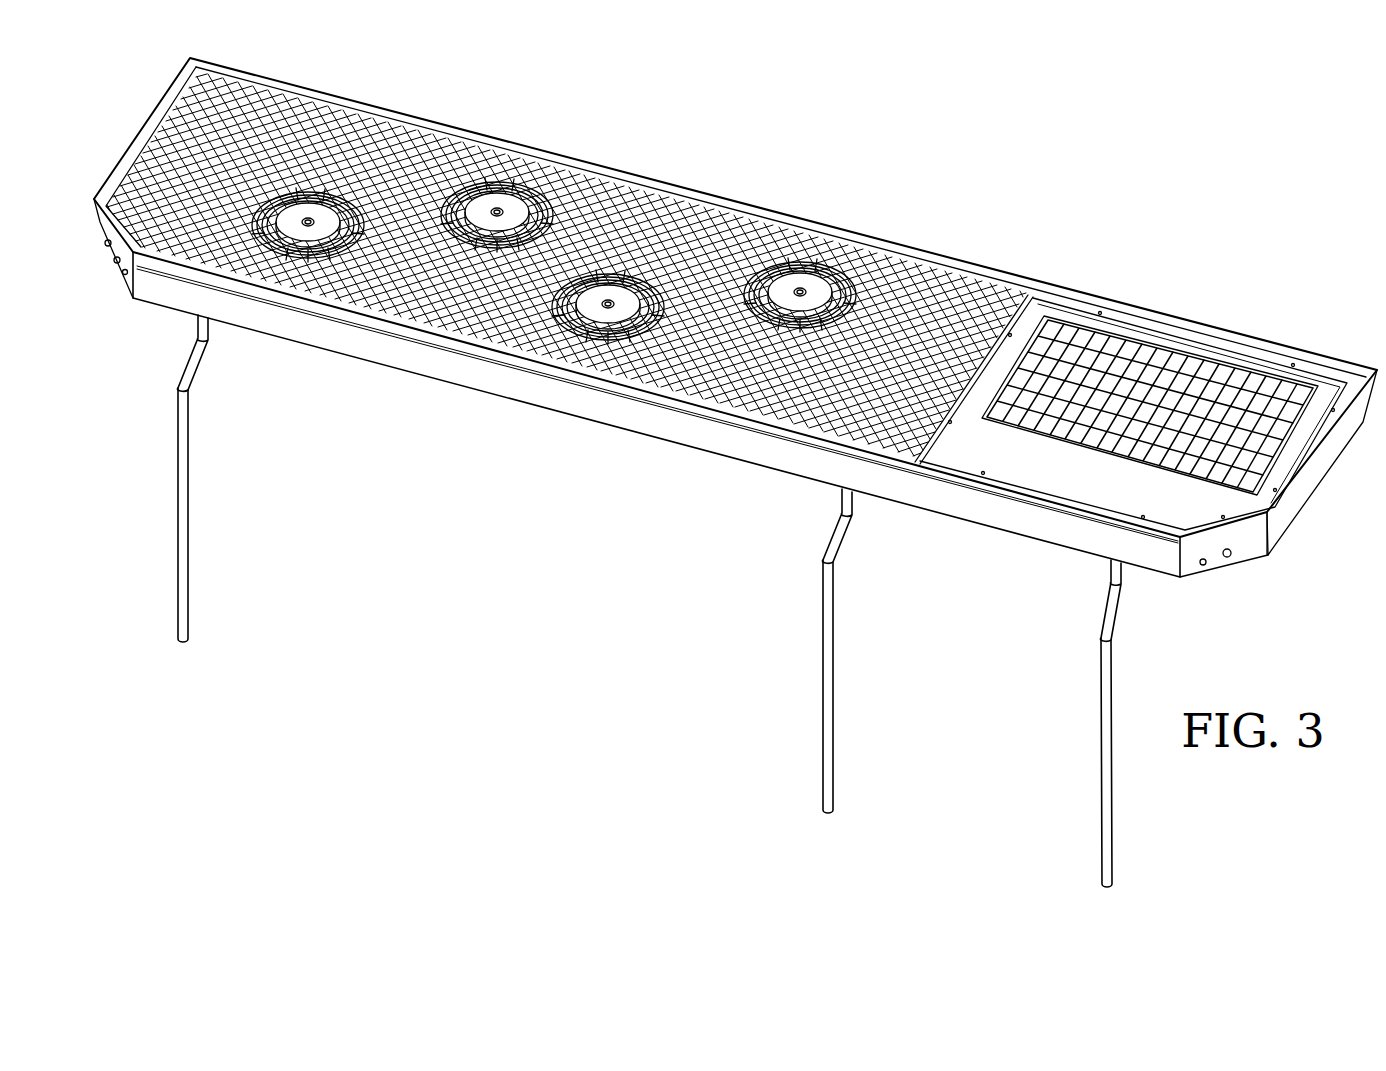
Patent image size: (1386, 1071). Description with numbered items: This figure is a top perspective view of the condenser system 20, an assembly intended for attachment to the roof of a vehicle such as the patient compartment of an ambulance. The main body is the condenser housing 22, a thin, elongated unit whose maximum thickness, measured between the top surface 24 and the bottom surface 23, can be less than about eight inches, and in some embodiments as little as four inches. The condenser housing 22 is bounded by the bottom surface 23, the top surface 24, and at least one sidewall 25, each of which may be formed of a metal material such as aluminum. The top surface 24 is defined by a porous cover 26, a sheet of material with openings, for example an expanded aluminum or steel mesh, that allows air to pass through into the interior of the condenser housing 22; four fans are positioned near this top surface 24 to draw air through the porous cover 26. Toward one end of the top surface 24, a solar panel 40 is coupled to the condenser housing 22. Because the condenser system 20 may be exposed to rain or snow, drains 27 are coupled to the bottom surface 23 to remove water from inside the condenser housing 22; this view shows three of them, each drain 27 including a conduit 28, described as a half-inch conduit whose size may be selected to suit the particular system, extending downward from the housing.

The condenser system 20 is at (592, 156).
The condenser housing 22 is at (140, 142).
The bottom surface 23 is at (553, 413).
The top surface 24 is at (1035, 312).
The sidewall 25 is at (168, 290).
The porous cover 26 is at (703, 247).
The drain 27 is at (195, 373).
The conduit 28 is at (187, 493).
The solar panel 40 is at (1200, 380).